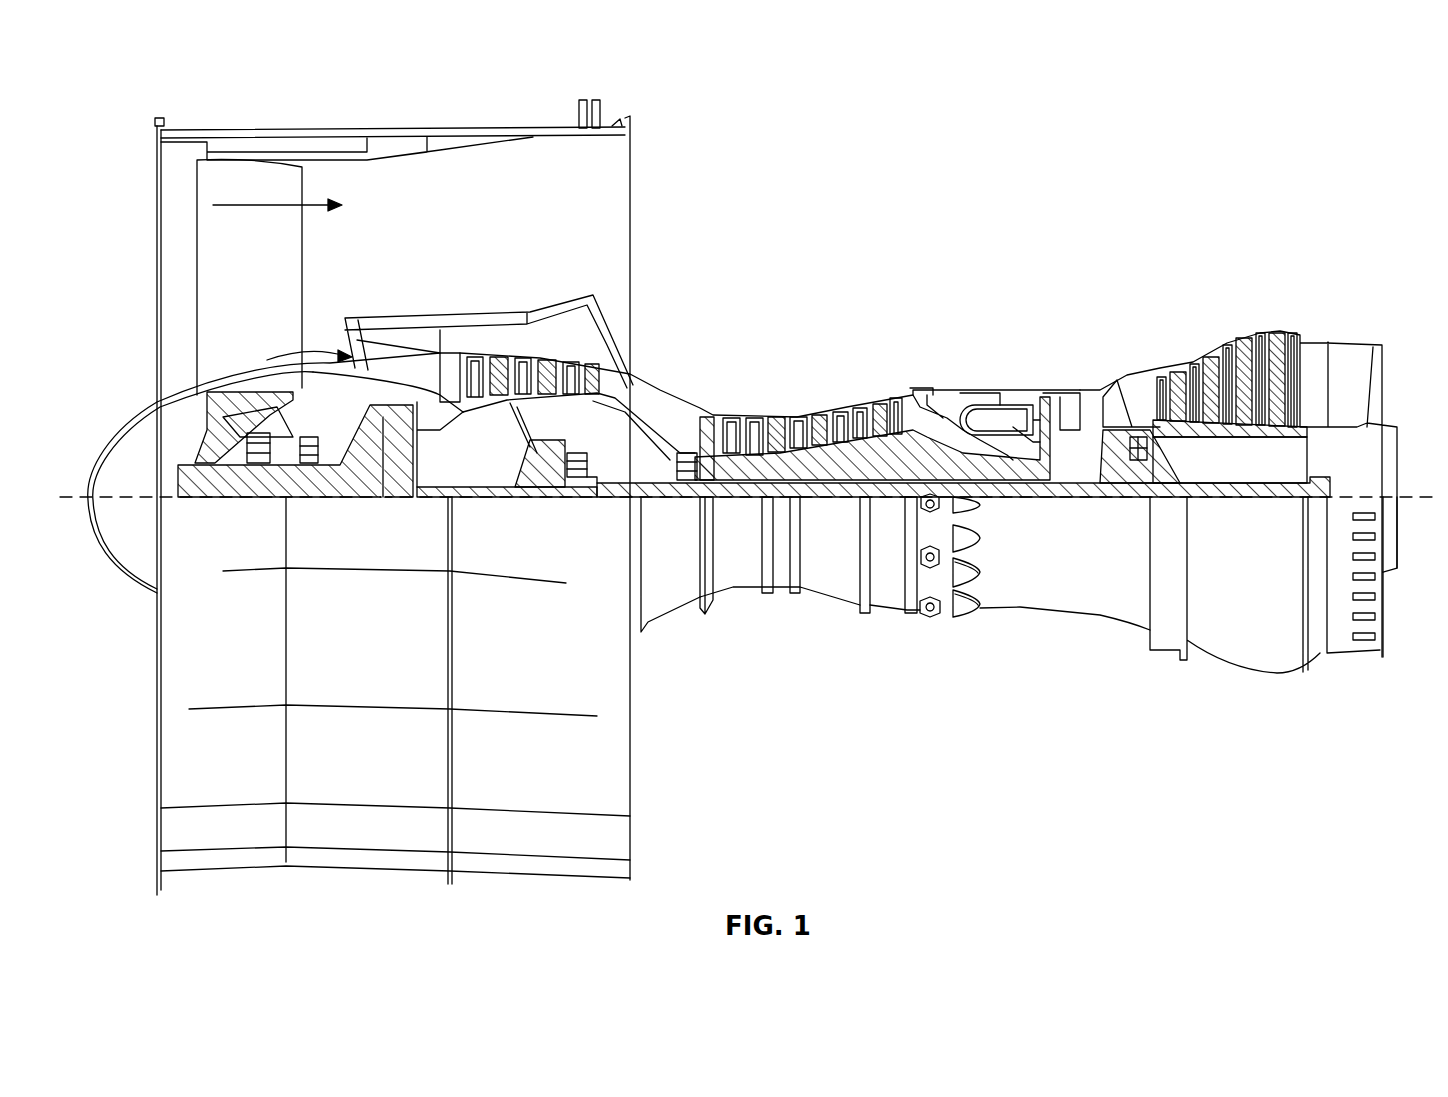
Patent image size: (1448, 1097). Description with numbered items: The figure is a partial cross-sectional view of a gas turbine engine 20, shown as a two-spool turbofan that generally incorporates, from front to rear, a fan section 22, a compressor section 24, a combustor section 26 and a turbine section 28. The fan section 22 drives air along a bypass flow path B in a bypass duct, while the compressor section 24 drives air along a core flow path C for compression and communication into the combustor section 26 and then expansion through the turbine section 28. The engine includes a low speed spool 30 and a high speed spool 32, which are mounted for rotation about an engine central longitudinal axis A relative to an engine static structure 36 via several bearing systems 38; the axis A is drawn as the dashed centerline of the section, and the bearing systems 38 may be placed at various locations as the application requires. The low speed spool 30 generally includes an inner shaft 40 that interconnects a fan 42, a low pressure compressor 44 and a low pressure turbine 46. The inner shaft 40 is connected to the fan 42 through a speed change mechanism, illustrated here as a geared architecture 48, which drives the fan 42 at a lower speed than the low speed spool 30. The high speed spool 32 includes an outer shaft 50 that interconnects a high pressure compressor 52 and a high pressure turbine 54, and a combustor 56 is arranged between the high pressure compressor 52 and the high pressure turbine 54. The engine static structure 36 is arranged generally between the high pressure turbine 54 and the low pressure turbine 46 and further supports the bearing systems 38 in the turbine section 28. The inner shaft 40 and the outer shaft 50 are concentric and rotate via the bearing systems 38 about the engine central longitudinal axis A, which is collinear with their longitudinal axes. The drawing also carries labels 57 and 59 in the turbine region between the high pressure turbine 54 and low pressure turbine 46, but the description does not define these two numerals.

The gas turbine engine 20 is at (1208, 168).
The fan section 22 is at (212, 96).
The compressor section 24 is at (705, 403).
The combustor section 26 is at (987, 348).
The turbine section 28 is at (1116, 322).
The low speed spool 30 is at (845, 500).
The high speed spool 32 is at (902, 450).
The engine static structure 36 is at (883, 614).
The bearing systems 38 is at (577, 473).
The inner shaft 40 is at (643, 495).
The fan 42 is at (272, 251).
The low pressure compressor 44 is at (547, 373).
The low pressure turbine 46 is at (1237, 355).
The geared architecture 48 is at (397, 463).
The outer shaft 50 is at (1015, 477).
The high pressure compressor 52 is at (807, 417).
The high pressure turbine 54 is at (1076, 393).
The combustor 56 is at (378, 128).
The mid-turbine frame 57 is at (1124, 377).
The airfoils/vanes 59 is at (1143, 418).
The engine central longitudinal axis A is at (1408, 497).
The bypass flow path B is at (278, 203).
The core flow path C is at (283, 353).